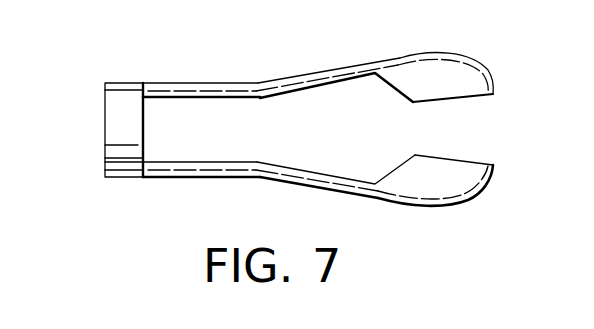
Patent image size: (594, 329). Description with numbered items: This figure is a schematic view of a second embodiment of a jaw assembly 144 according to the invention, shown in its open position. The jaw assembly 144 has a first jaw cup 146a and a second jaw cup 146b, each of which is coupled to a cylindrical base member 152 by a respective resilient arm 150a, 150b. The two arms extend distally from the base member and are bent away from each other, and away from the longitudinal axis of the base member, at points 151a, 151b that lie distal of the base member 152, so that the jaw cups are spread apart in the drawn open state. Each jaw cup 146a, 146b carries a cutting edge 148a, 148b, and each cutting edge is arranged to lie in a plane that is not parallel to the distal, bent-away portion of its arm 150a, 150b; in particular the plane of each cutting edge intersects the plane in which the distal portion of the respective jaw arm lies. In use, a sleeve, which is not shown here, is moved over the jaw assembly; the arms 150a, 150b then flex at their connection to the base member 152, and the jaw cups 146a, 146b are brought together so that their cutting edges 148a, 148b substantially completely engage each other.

The jaw assembly 144 is at (168, 241).
The cylindrical base member 152 is at (125, 83).
The bend point of first arm 151a is at (255, 86).
The bend point of second arm 151b is at (252, 176).
The first resilient arm 150a is at (313, 64).
The second resilient arm 150b is at (292, 169).
The first jaw cup 146a is at (460, 62).
The second jaw cup 146b is at (472, 200).
The first cutting edge 148a is at (455, 100).
The second cutting edge 148b is at (472, 164).